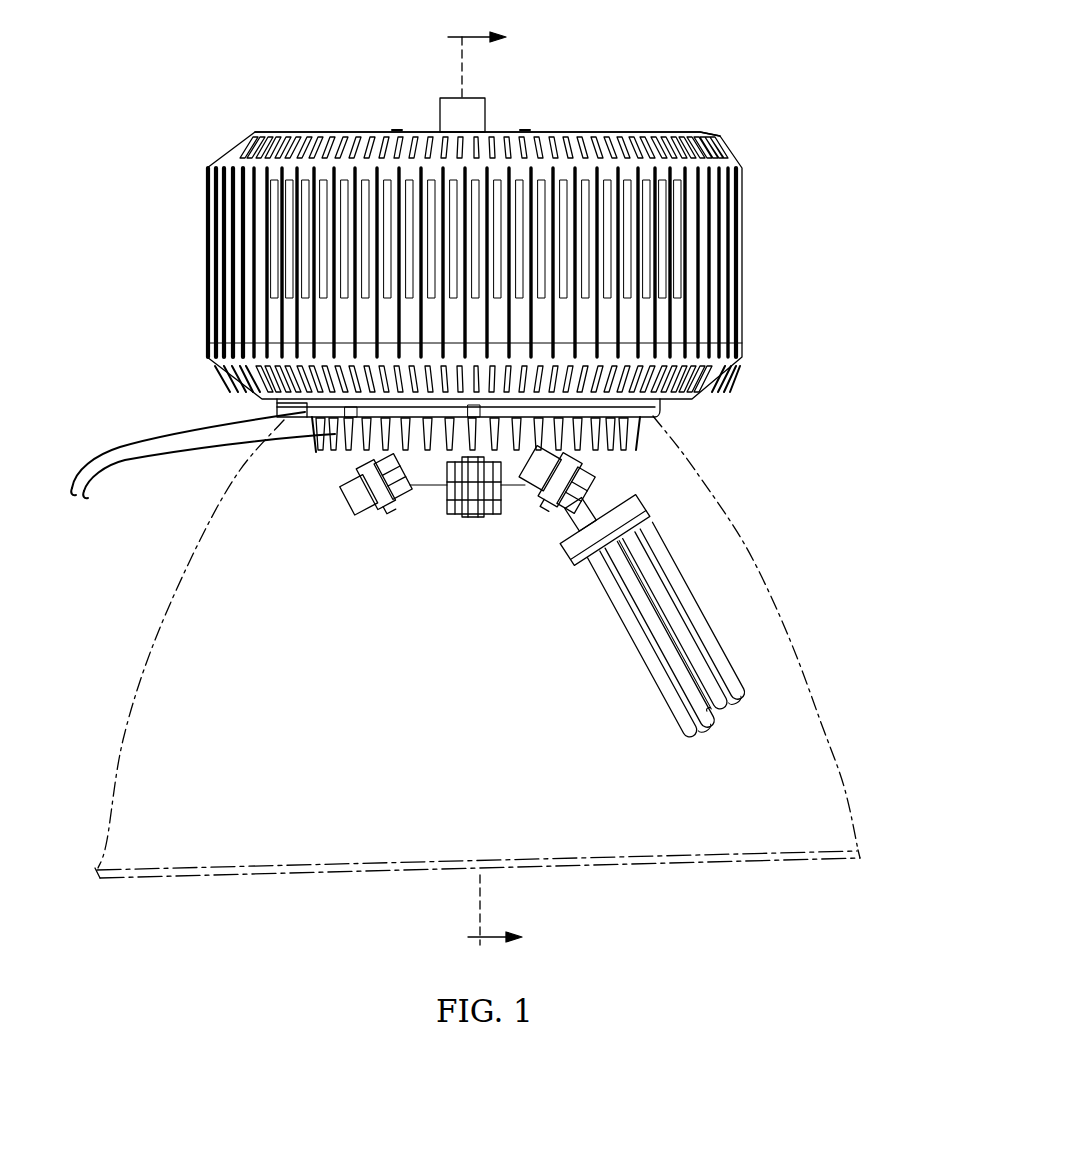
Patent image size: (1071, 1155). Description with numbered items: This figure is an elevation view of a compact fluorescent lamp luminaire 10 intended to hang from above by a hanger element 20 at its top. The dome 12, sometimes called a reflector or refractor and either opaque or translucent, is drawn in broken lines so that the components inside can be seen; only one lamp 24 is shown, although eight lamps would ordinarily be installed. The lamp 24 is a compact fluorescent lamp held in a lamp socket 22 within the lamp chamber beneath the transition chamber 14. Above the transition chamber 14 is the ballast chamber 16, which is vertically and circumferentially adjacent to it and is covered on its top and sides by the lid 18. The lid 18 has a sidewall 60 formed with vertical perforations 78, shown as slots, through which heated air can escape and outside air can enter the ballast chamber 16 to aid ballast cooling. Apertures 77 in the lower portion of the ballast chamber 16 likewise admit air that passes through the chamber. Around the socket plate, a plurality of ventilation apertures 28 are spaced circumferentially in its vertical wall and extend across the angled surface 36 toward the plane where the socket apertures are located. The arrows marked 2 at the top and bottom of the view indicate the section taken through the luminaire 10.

The section line 2- 2 is at (499, 487).
The compact fluorescent lamp luminaire 10 is at (708, 68).
The dome 12 is at (792, 626).
The transition chamber 14 is at (636, 424).
The ballast chamber 16 is at (778, 200).
The lid 18 is at (607, 130).
The hanger element 20 is at (486, 110).
The lamp socket 22 is at (600, 478).
The lamp 24 is at (683, 591).
The ventilation aperture 28 is at (437, 450).
The angled surface 36 is at (323, 447).
The sidewall 60 is at (734, 289).
The apertures 77 is at (82, 535).
The perforations 78 is at (390, 185).